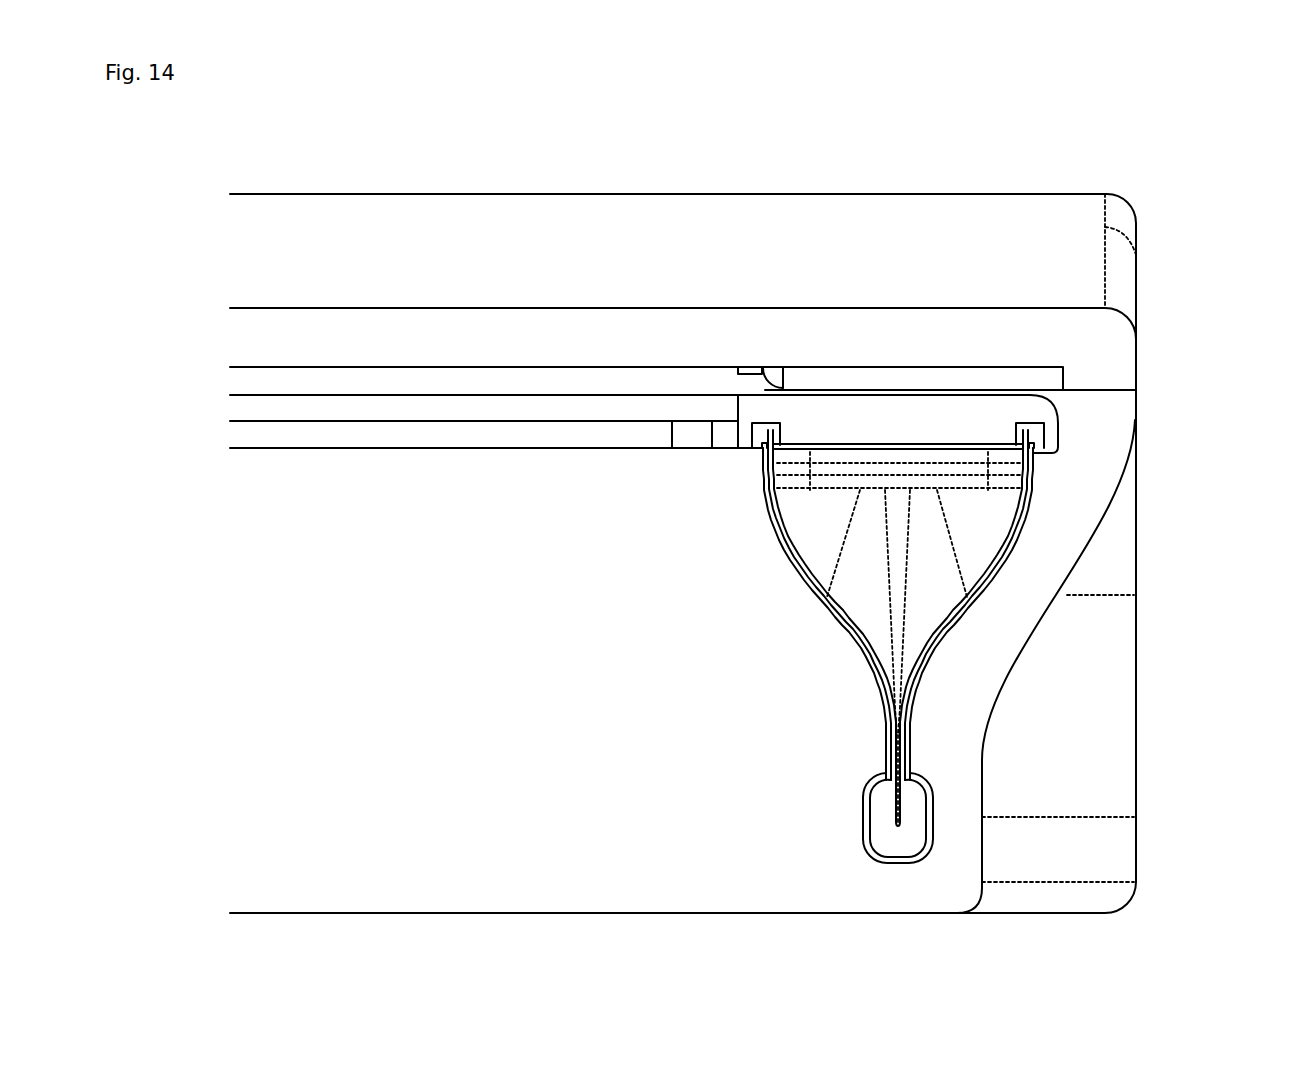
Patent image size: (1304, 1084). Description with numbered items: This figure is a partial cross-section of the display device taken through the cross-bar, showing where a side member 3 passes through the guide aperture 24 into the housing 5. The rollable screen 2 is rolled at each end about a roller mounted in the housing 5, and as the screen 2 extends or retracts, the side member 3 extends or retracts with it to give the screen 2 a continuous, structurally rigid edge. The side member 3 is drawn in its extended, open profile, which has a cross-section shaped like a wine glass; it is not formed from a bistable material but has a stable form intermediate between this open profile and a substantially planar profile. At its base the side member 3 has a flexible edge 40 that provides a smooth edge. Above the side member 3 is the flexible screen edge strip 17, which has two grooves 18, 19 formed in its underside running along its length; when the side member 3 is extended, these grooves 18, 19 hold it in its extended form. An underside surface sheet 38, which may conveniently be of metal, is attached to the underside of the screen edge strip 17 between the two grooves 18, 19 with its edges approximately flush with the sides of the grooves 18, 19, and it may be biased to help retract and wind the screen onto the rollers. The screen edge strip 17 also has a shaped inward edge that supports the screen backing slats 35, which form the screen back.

The housing 5 is at (780, 237).
The rollable screen 2 is at (568, 402).
The screen backing slats 35 is at (397, 438).
The screen edge strip 17 is at (935, 410).
The groove 18 is at (1030, 434).
The groove 19 is at (758, 437).
The guide aperture 24 is at (1033, 502).
The underside surface sheet 38 is at (830, 455).
The side member 3 is at (897, 750).
The flexible edge 40 is at (878, 822).